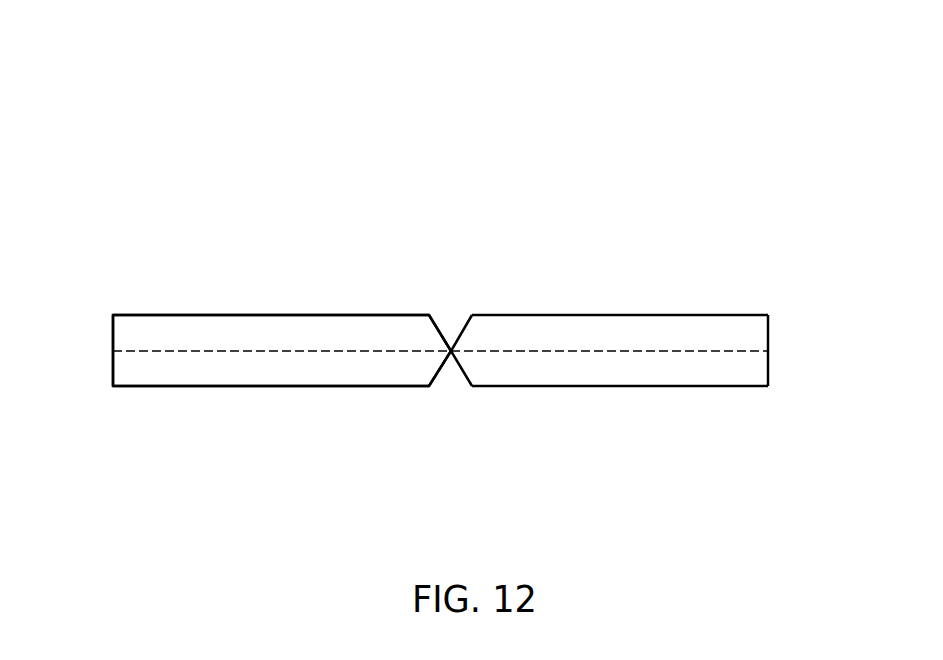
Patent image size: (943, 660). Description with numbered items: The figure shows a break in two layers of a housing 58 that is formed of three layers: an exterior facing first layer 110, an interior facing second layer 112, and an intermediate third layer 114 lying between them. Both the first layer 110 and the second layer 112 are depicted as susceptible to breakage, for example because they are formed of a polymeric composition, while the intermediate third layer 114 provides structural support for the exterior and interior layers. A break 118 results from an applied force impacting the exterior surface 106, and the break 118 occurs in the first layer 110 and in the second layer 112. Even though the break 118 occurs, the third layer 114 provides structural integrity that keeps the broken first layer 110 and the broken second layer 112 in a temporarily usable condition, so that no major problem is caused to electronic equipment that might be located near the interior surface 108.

The housing 58 is at (480, 76).
The exterior surface 106 is at (263, 315).
The interior surface 108 is at (197, 386).
The first layer 110 is at (150, 334).
The second layer 112 is at (323, 375).
The third layer 114 is at (283, 363).
The break 118 is at (457, 320).